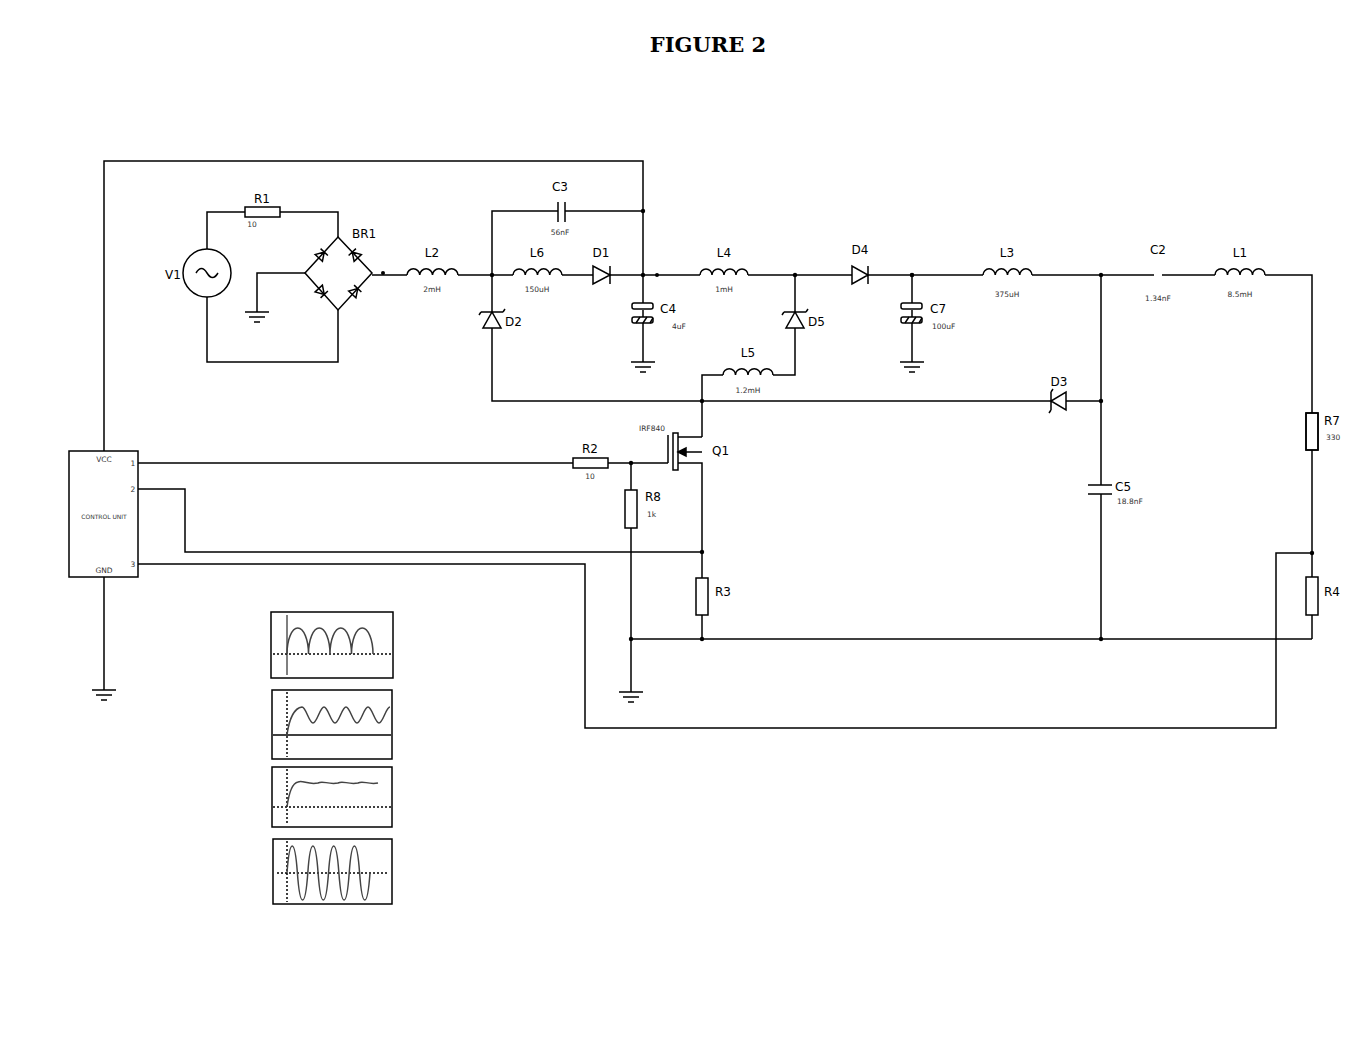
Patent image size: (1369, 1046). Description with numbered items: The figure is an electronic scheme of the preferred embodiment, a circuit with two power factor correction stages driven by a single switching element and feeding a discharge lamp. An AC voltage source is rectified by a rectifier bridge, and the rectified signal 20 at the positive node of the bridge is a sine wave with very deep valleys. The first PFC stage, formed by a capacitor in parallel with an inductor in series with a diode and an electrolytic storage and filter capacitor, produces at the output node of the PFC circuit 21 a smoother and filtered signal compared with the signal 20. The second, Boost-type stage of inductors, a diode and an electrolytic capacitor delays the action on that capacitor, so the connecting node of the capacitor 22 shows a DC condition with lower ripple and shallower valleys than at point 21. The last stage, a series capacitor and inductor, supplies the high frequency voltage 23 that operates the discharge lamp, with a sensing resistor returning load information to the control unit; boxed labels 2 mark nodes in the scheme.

The power converter circuit node 2 is at (383, 270).
The rectified signal 20 is at (294, 645).
The output node of the PFC circuit 21 is at (294, 724).
The connecting node of the capacitor C7 22 is at (294, 797).
The high frequency voltage on the discharge lamp 23 is at (1306, 433).